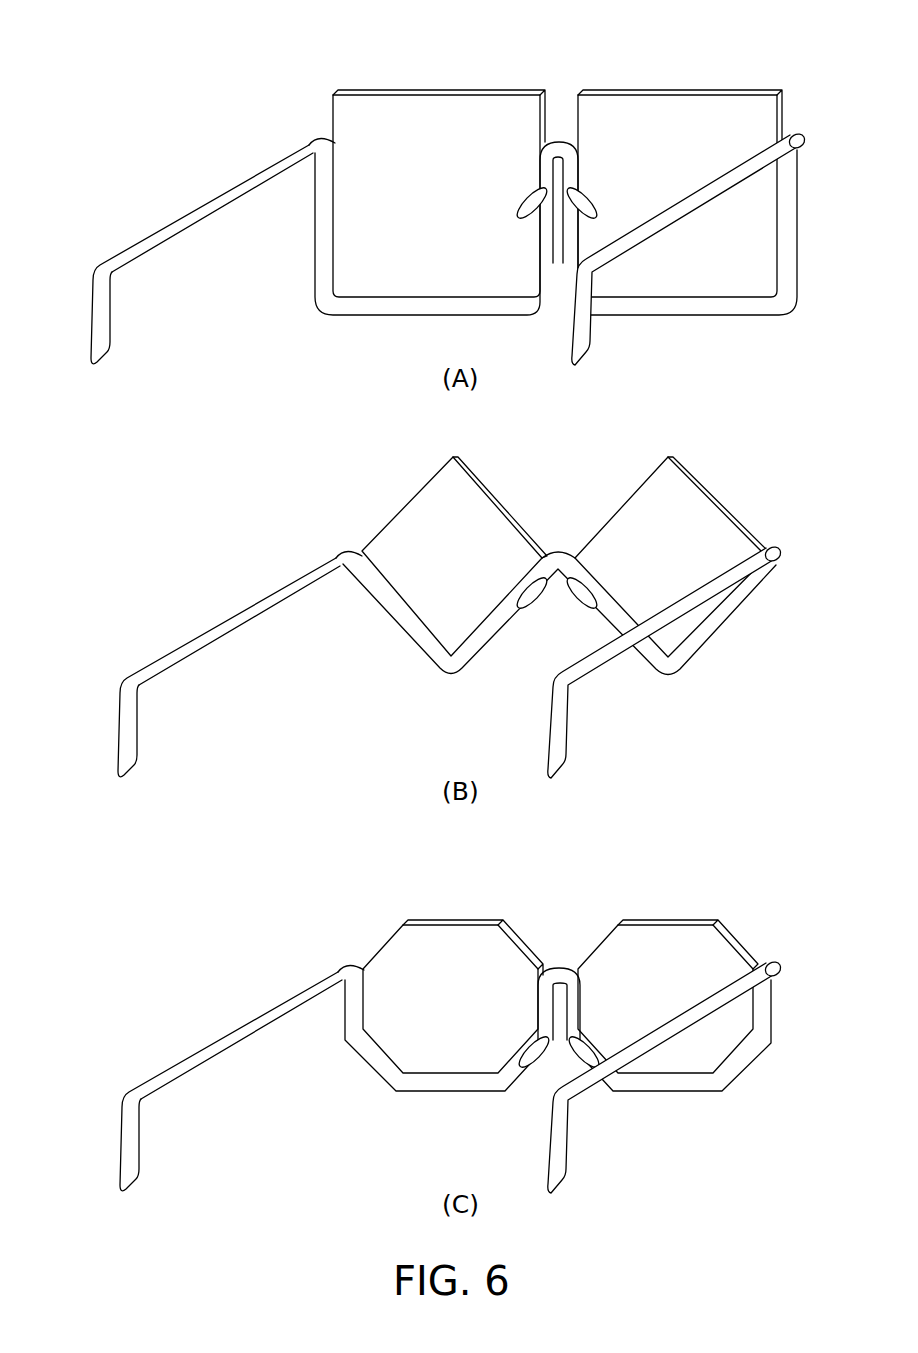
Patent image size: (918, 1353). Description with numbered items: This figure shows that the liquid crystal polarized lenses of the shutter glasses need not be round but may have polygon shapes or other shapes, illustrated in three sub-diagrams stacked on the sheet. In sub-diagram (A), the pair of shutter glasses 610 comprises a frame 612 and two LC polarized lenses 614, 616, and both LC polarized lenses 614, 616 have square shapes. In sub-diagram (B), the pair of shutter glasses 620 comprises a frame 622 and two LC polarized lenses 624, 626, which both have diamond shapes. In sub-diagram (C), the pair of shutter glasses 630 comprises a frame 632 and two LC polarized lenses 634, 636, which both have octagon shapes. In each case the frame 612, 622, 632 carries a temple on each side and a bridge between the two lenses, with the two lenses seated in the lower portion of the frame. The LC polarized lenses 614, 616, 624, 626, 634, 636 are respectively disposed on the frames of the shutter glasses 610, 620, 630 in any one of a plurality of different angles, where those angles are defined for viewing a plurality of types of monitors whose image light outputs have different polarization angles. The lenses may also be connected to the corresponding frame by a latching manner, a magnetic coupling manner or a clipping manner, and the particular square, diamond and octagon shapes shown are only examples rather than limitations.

The pair of shutter glasses 610 is at (422, 197).
The frame 612 is at (170, 228).
The LC polarized lens 614 is at (453, 142).
The LC polarized lens 616 is at (678, 142).
The pair of shutter glasses 620 is at (424, 614).
The frame 622 is at (197, 638).
The LC polarized lens 624 is at (402, 522).
The LC polarized lens 626 is at (635, 522).
The pair of shutter glasses 630 is at (424, 1039).
The frame 632 is at (197, 1056).
The LC polarized lens 634 is at (388, 960).
The LC polarized lens 636 is at (615, 968).